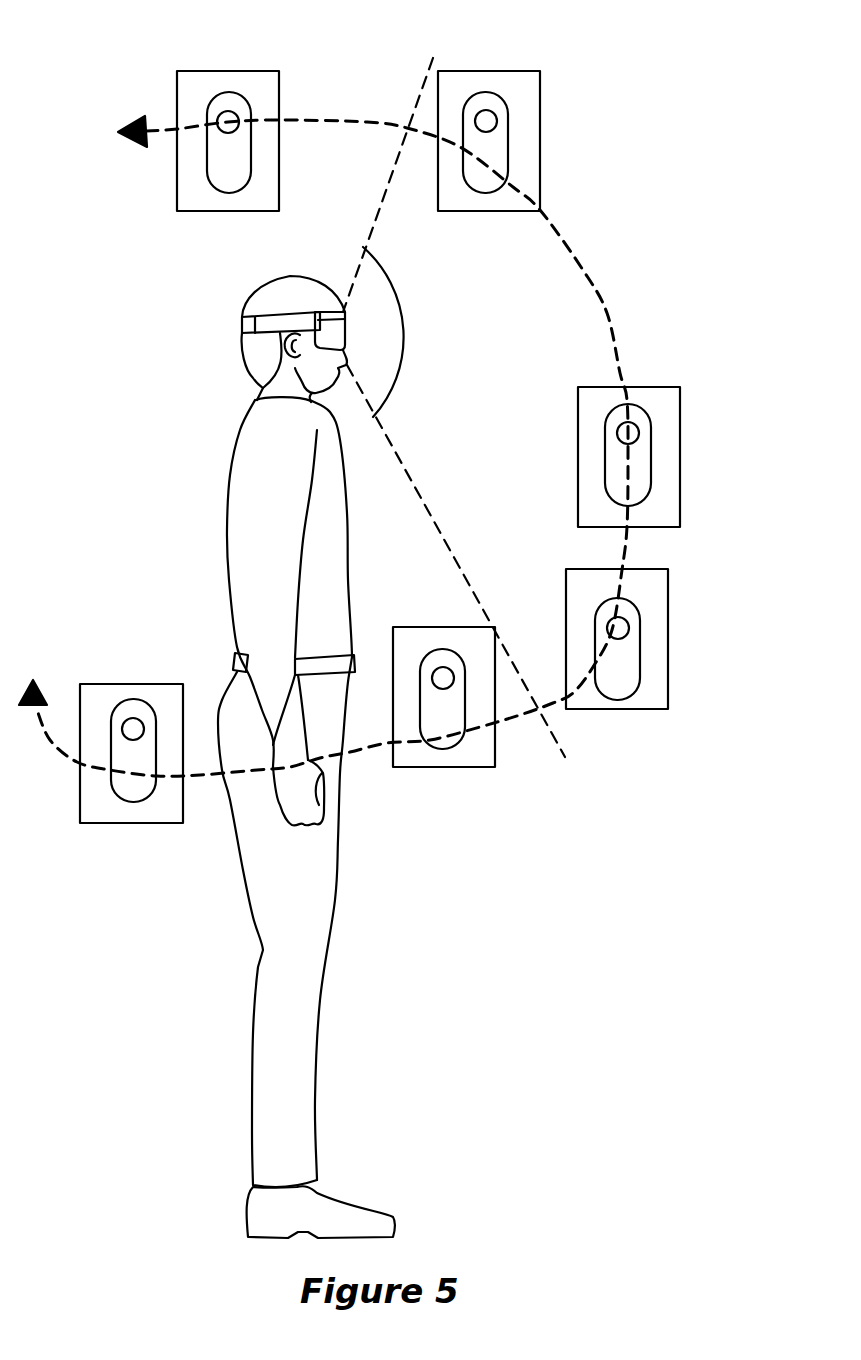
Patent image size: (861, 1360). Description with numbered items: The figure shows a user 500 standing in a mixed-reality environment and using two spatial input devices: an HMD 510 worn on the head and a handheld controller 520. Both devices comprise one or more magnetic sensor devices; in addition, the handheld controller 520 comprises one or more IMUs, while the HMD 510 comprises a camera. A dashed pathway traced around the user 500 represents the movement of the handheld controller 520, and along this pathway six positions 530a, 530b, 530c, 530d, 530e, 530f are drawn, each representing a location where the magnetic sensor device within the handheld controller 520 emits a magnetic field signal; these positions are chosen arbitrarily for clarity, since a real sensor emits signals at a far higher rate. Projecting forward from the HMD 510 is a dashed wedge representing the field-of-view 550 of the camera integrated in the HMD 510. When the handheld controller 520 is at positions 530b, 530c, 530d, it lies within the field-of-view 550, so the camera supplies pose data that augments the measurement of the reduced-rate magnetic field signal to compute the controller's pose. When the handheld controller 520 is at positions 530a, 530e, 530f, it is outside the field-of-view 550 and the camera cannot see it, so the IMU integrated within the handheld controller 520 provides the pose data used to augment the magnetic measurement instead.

The user 500 is at (250, 494).
The HMD 510 is at (342, 308).
The handheld controller 520 is at (228, 93).
The position 530a is at (287, 33).
The position 530b is at (520, 71).
The position 530c is at (680, 455).
The position 530d is at (638, 710).
The position 530e is at (457, 766).
The position 530f is at (148, 823).
The field-of-view 550 is at (403, 308).